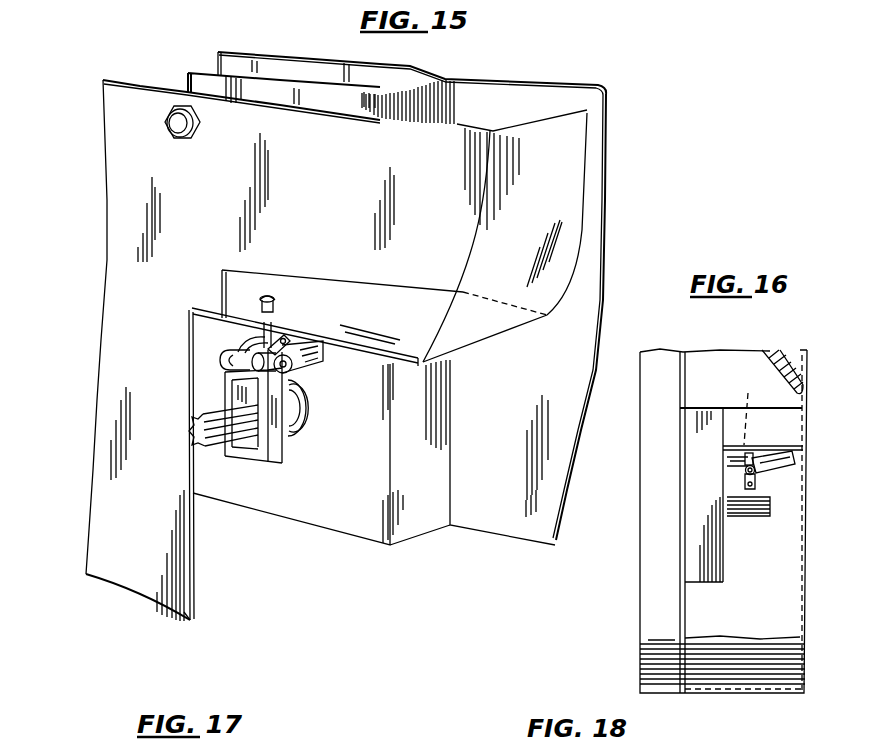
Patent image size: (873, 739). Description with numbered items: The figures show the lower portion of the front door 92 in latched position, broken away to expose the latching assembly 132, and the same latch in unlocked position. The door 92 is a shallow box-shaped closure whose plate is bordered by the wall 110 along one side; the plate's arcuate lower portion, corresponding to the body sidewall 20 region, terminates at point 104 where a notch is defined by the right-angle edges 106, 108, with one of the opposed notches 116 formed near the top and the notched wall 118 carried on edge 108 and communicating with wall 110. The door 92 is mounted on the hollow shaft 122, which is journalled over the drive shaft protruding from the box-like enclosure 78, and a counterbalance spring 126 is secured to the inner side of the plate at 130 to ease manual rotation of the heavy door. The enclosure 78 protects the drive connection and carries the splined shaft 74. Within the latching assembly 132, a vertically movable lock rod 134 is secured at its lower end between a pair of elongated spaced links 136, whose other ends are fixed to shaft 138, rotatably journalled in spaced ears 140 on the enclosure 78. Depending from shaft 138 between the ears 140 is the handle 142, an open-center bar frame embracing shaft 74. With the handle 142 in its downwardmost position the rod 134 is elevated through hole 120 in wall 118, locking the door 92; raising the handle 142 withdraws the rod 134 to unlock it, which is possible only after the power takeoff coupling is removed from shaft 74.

In FIG. 16, the sidewall 20 is at (648, 575).
In FIG. 15, the splined shaft 74 is at (200, 430).
In FIG. 16, the splined shaft 74 is at (770, 519).
In FIG. 15, the box-like enclosure 78 is at (296, 522).
In FIG. 16, the box-like enclosure 78 is at (697, 585).
In FIG. 15, the door 92 is at (100, 176).
In FIG. 16, the door 92 is at (749, 702).
In FIG. 15, the point 104 is at (195, 626).
In FIG. 15, the edge 106 is at (195, 558).
In FIG. 15, the edge 108 is at (215, 318).
In FIG. 15, the wall 110 is at (545, 202).
In FIG. 15, the notch 116 is at (404, 312).
In FIG. 15, the notched wall 118 is at (413, 368).
In FIG. 16, the notched wall 118 is at (783, 444).
In FIG. 15, the hole 120 is at (280, 312).
In FIG. 16, the hole 120 is at (746, 411).
In FIG. 15, the hollow shaft 122 is at (178, 138).
In FIG. 16, the counterbalance spring 126 is at (795, 345).
In FIG. 16, the spring attachment point 130 is at (800, 402).
In FIG. 15, the coupling assembly 132 is at (307, 457).
In FIG. 16, the coupling assembly 132 is at (770, 486).
In FIG. 15, the lock rod 134 is at (268, 296).
In FIG. 15, the links 136 is at (240, 340).
In FIG. 16, the links 136 is at (745, 486).
In FIG. 15, the shaft 138 is at (245, 370).
In FIG. 15, the ears 140 is at (222, 358).
In FIG. 16, the ears 140 is at (796, 473).
In FIG. 15, the handle 142 is at (278, 463).